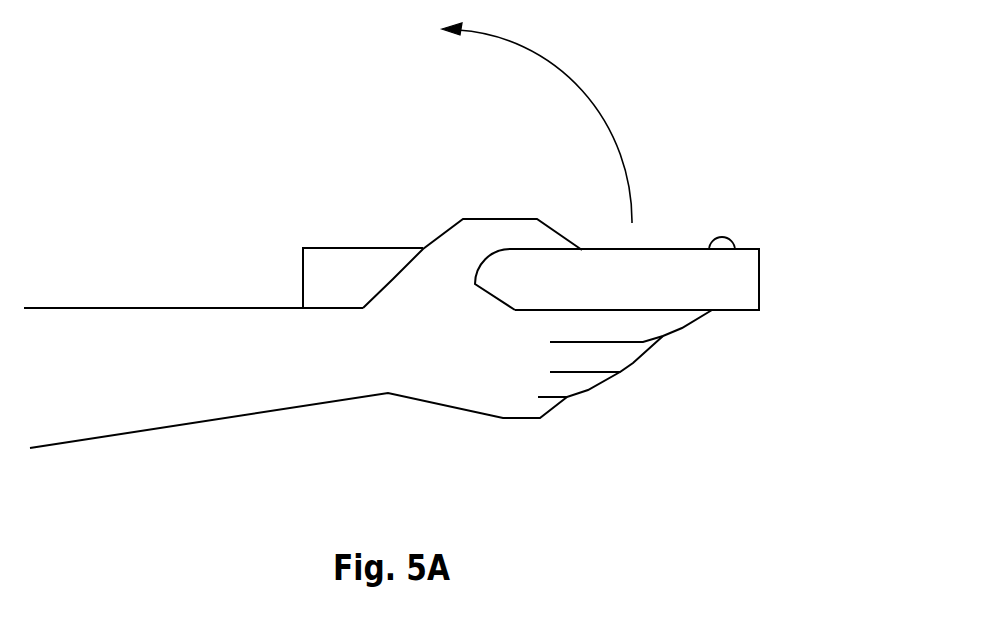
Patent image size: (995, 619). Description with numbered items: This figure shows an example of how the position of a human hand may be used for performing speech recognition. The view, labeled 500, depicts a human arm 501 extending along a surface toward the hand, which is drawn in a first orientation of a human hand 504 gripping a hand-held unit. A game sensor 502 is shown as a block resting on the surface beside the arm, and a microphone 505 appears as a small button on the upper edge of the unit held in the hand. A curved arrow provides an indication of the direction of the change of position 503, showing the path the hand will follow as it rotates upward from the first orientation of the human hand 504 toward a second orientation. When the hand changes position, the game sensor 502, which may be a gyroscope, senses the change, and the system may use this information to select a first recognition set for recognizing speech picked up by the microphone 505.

The system / scenario 500 is at (129, 89).
The human arm 501 is at (162, 307).
The game sensor 502 is at (302, 252).
The indication of the direction of the change of position 503 is at (593, 95).
The first orientation of a human hand 504 is at (590, 388).
The microphone 505 is at (740, 243).